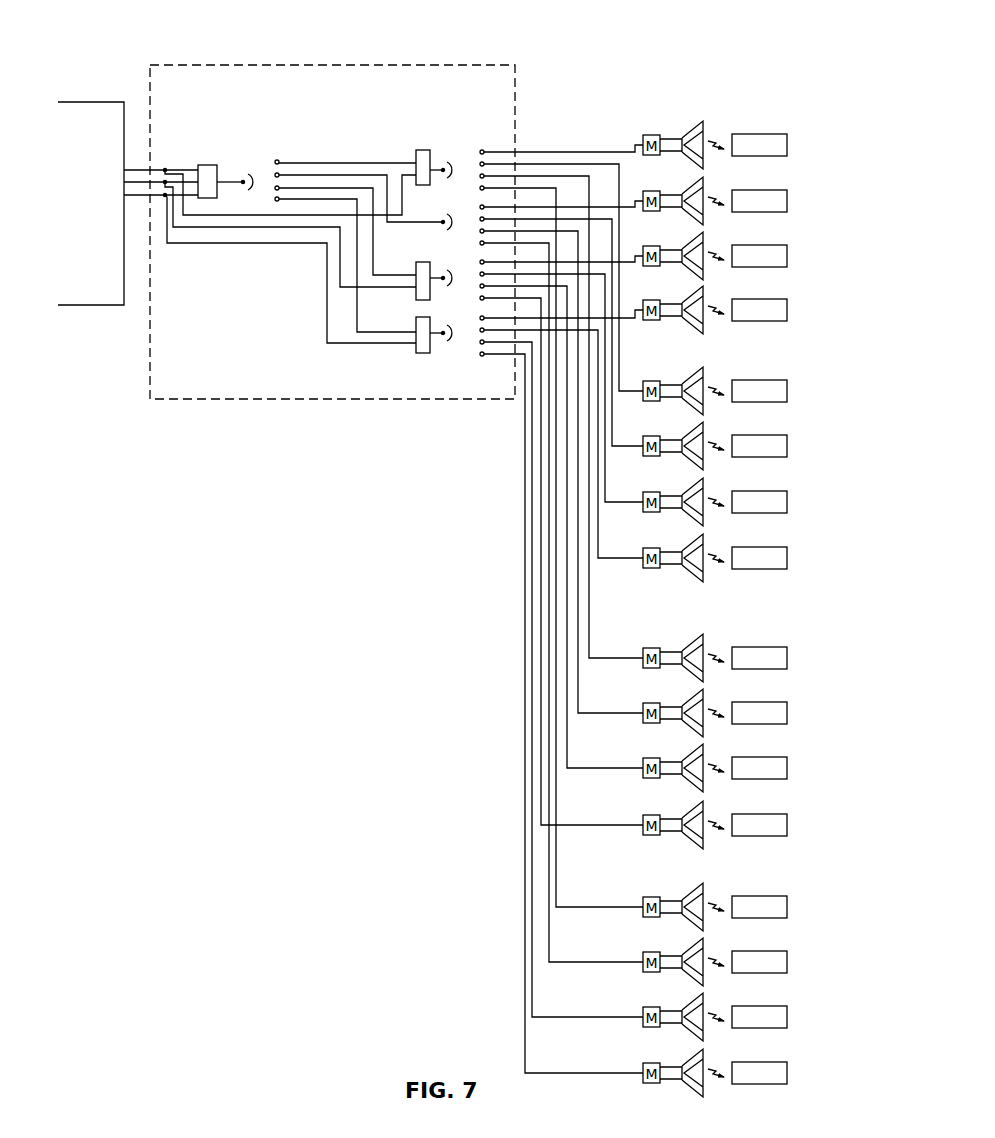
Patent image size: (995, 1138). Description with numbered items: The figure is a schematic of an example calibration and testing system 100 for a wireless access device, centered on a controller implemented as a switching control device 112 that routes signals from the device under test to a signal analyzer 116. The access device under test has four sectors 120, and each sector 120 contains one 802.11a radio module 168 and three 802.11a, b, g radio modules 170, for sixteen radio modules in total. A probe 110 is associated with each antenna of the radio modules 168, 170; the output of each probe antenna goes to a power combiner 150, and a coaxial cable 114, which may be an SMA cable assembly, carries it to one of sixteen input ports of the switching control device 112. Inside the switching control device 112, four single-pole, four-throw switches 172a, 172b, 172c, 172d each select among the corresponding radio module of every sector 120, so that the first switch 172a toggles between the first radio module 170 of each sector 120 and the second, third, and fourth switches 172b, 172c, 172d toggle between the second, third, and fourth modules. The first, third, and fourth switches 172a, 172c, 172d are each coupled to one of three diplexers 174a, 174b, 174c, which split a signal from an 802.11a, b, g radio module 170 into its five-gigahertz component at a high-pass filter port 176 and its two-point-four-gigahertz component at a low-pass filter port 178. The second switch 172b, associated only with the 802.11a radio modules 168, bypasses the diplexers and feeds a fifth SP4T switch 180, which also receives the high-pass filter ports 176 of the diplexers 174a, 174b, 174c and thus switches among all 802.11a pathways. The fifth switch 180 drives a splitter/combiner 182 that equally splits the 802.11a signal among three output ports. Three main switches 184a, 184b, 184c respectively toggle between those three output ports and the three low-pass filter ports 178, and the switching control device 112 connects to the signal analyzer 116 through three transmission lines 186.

The calibration and testing system 100 is at (172, 622).
The probe 110 is at (698, 303).
The switching control device 112 is at (204, 404).
The coaxial cable 114 is at (556, 564).
The signal analyzer 116 is at (90, 310).
The sector 120 is at (652, 584).
The power combiner 150 is at (643, 833).
The 802.11a radio module 168 is at (787, 201).
The 802.11a, b, g radio module 170 is at (787, 145).
The first SP4T switch 172a is at (450, 163).
The second SP4T switch 172b is at (450, 218).
The third SP4T switch 172c is at (450, 274).
The fourth SP4T switch 172d is at (452, 328).
The first diplexer 174a is at (427, 147).
The second diplexer 174b is at (434, 308).
The third diplexer 174c is at (424, 357).
The high-pass filter port 176 is at (416, 158).
The low-pass filter port 178 is at (416, 174).
The fifth SP4T switch 180 is at (252, 172).
The splitter/combiner 182 is at (204, 165).
The first main switch 184a is at (152, 170).
The second main switch 184b is at (153, 182).
The third main switch 184c is at (155, 195).
The transmission line 186 is at (131, 188).